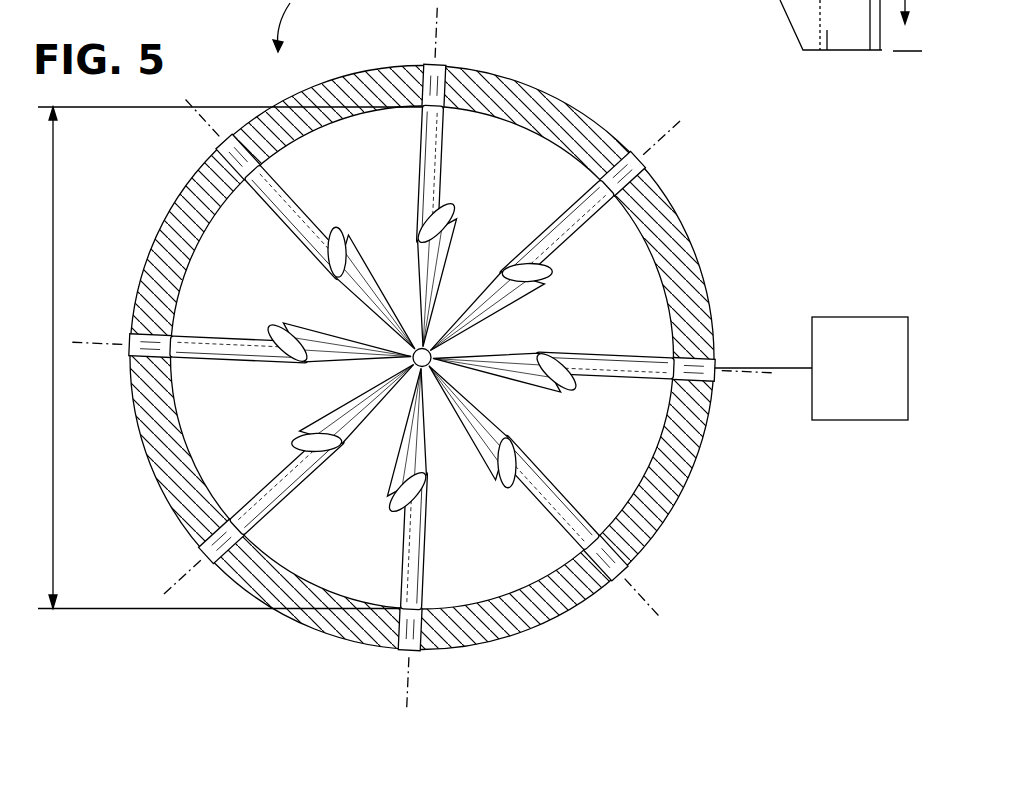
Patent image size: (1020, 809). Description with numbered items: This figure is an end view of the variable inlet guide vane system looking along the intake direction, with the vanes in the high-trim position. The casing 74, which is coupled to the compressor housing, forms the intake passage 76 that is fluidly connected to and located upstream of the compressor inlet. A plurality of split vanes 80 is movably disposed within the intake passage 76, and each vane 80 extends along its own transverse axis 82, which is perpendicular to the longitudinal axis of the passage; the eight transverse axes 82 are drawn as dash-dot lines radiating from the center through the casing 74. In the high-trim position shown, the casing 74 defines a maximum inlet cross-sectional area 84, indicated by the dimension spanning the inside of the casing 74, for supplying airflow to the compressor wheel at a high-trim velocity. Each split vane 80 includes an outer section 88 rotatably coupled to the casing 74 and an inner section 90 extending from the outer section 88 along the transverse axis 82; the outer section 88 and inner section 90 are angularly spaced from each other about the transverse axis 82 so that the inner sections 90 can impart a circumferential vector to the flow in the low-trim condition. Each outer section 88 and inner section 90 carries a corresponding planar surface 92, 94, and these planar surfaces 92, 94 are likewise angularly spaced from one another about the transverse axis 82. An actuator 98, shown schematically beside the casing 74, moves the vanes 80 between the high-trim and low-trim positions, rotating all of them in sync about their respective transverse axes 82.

The casing 74 is at (543, 86).
The intake passage 76 is at (422, 357).
The split vane 80 is at (272, 186).
The transverse axis 82 is at (433, 16).
The maximum inlet cross-sectional area 84 is at (51, 405).
The outer section 88 is at (412, 118).
The inner section 90 is at (424, 240).
The planar surface 92 is at (424, 178).
The planar surface 94 is at (466, 310).
The actuator 98 is at (852, 422).